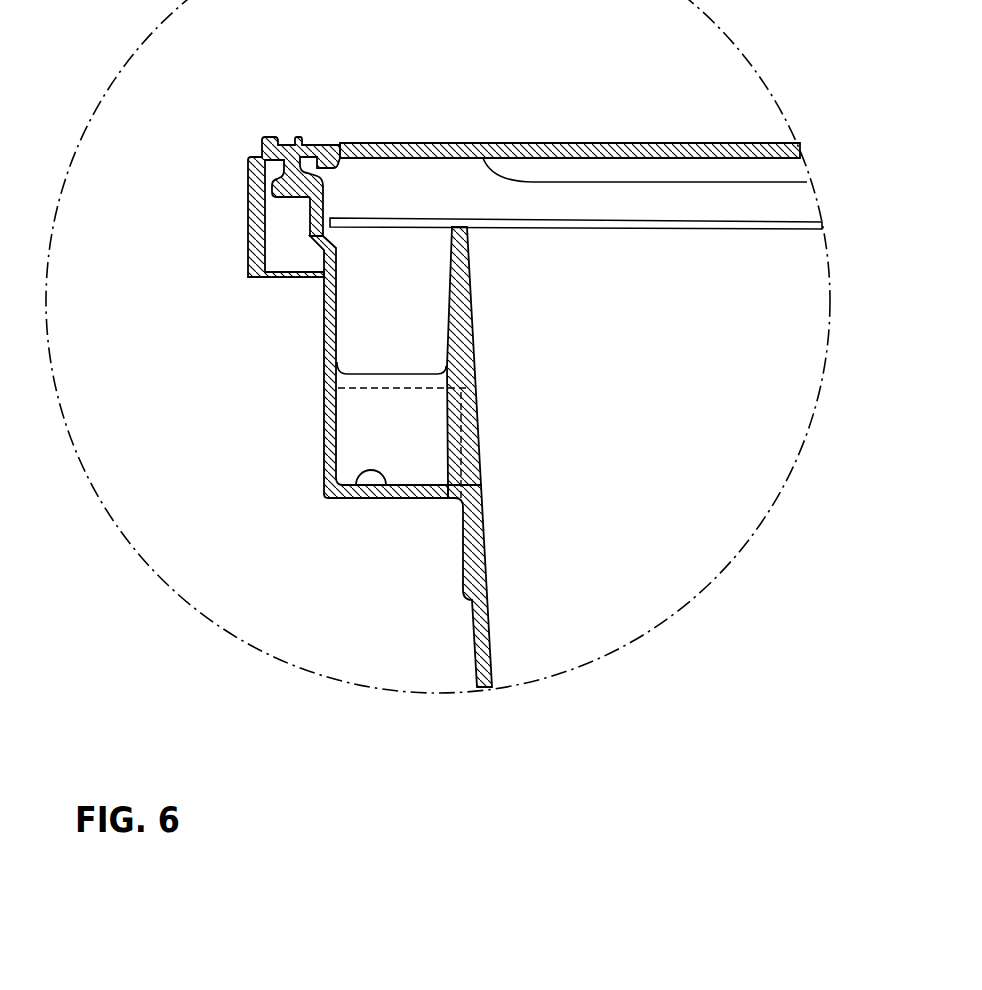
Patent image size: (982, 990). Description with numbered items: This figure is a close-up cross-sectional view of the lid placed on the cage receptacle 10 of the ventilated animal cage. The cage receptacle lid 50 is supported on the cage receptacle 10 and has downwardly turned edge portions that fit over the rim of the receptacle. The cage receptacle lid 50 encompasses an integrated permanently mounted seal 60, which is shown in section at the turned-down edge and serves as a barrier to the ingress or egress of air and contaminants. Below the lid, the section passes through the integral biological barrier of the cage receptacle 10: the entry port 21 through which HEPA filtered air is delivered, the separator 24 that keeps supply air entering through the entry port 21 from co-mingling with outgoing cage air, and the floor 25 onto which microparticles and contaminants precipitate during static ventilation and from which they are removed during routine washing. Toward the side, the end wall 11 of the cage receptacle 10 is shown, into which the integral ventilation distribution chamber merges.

The cage receptacle 10 is at (685, 482).
The end wall 11 is at (477, 606).
The entry port 21 is at (335, 440).
The separator 24 is at (452, 333).
The floor 25 is at (362, 473).
The cage receptacle lid 50 is at (453, 147).
The integrated permanently mounted seal 60 is at (302, 172).